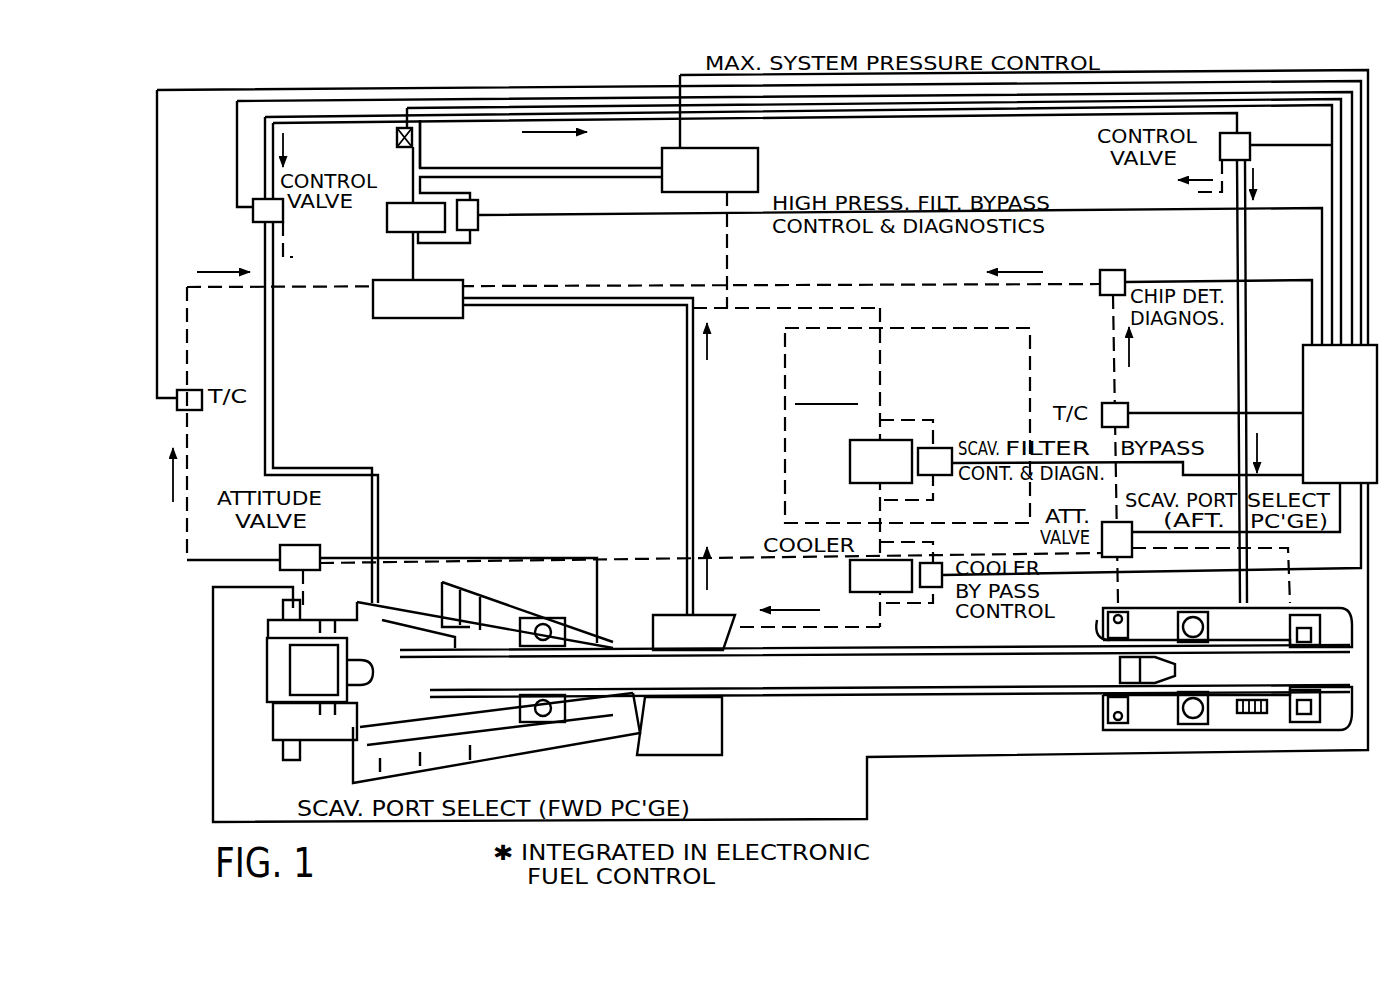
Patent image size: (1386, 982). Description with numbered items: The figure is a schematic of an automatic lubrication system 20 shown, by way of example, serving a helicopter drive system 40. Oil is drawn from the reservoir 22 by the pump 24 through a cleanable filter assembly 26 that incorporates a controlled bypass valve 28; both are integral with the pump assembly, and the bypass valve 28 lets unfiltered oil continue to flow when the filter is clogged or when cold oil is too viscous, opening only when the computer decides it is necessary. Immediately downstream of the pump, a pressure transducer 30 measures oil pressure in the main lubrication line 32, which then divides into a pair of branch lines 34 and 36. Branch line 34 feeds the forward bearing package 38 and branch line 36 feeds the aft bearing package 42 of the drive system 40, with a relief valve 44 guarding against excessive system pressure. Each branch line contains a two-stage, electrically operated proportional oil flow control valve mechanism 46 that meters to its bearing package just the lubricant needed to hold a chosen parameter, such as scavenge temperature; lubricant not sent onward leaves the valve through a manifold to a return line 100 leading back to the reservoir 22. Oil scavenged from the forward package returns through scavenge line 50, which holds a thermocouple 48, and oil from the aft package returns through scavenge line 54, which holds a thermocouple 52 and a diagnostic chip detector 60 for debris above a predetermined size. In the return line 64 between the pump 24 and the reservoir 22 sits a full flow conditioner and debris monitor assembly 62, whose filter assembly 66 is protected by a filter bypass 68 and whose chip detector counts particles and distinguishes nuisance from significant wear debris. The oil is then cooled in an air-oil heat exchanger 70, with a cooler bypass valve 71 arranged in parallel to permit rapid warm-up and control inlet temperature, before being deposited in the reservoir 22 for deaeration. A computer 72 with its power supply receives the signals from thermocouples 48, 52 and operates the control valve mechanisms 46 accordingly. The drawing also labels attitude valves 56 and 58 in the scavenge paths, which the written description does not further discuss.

The lubrication system 20 is at (1290, 67).
The reservoir 22 is at (637, 757).
The pump 24 is at (442, 318).
The cleanable filter assembly 26 is at (397, 203).
The controlled bypass valve 28 is at (478, 210).
The pressure transducer 30 is at (395, 138).
The main lubrication line 32 is at (422, 152).
The branch lubrication line 34 is at (274, 352).
The branch lubrication line 36 is at (977, 122).
The forward bearing package 38 is at (258, 673).
The drive system 40 is at (813, 700).
The aft bearing package 42 is at (1293, 725).
The relief valve 44 is at (760, 158).
The proportional oil flow control valve mechanism 46 is at (253, 212).
The thermocouple 48 is at (177, 410).
The scavenge line 50 is at (187, 532).
The thermocouple 52 is at (1128, 405).
The scavenge line 54 is at (1108, 318).
The attitude valve 56 is at (280, 550).
The attitude valve 58 is at (1130, 550).
The diagnostic chip detector 60 is at (1126, 272).
The full flow conditioner and debris monitor assembly 62 is at (783, 372).
The return line 64 is at (882, 308).
The filter assembly 66 is at (896, 475).
The filter bypass 68 is at (940, 455).
The air-oil heat exchanger 70 is at (896, 590).
The cooler bypass valve 71 is at (937, 590).
The computer 72 is at (1303, 357).
The return line 100 is at (297, 262).